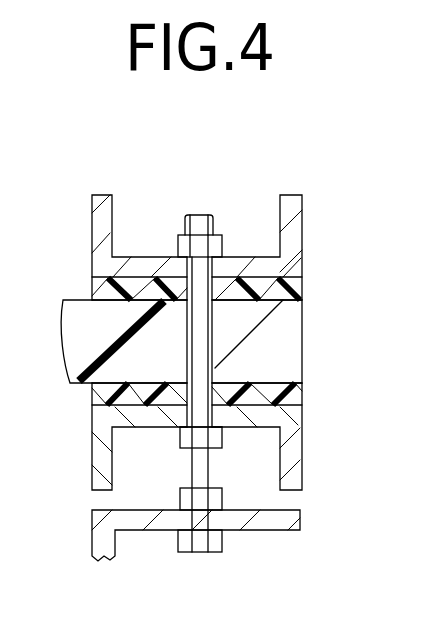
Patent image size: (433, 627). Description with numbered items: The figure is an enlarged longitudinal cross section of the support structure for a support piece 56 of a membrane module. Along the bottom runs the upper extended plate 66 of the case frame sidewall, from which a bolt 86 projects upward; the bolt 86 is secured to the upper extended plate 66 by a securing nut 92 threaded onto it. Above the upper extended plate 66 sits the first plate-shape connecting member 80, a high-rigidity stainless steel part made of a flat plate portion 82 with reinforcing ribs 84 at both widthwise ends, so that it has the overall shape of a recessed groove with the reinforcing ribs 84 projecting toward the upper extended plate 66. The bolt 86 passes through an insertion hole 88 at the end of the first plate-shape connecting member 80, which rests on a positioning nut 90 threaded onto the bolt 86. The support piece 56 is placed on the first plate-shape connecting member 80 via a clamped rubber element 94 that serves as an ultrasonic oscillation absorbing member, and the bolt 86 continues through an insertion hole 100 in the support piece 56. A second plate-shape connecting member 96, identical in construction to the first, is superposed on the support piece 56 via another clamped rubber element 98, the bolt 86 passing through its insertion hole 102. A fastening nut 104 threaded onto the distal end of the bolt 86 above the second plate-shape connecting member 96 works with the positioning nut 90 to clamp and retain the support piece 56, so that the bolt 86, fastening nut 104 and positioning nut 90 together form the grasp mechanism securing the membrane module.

The support piece 56 is at (280, 343).
The upper extended plate 66 is at (257, 520).
The first plate-shape connecting member 80 is at (308, 449).
The flat plate portion 82 is at (135, 270).
The reinforcing rib 84 is at (100, 228).
The bolt 86 is at (192, 337).
The insertion hole 88 is at (192, 432).
The positioning nut 90 is at (205, 440).
The securing nut 92 is at (195, 497).
The clamped rubber element 94 is at (90, 397).
The second plate-shape connecting member 96 is at (306, 202).
The clamped rubber element 98 is at (295, 286).
The insertion hole 100 is at (212, 356).
The insertion hole 102 is at (210, 255).
The fastening nut 104 is at (197, 240).